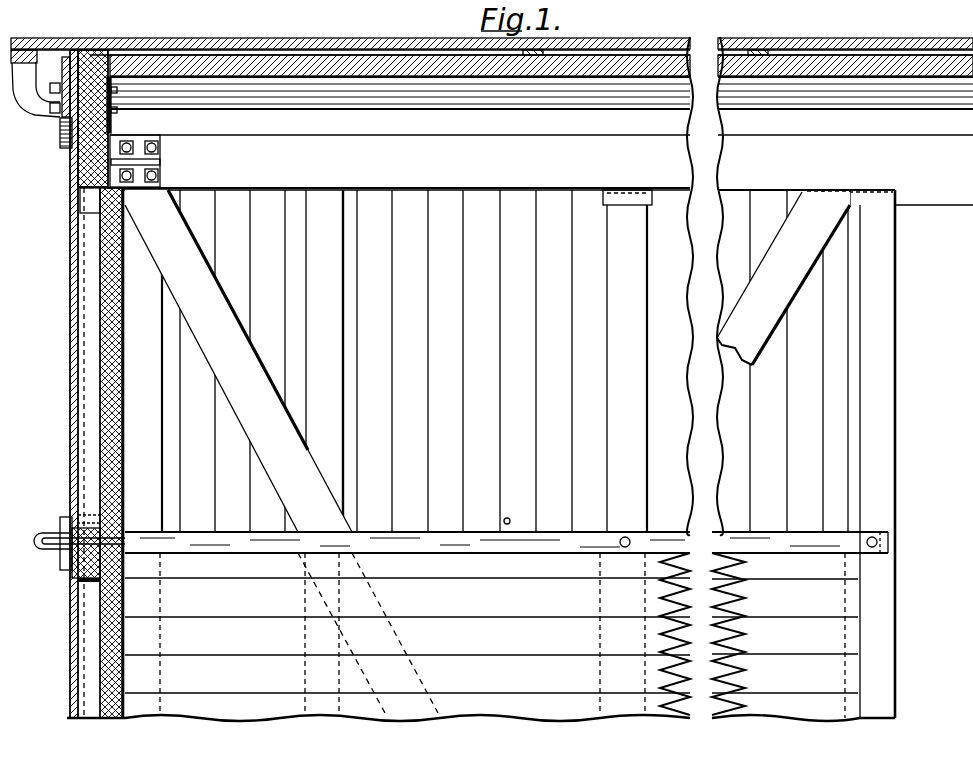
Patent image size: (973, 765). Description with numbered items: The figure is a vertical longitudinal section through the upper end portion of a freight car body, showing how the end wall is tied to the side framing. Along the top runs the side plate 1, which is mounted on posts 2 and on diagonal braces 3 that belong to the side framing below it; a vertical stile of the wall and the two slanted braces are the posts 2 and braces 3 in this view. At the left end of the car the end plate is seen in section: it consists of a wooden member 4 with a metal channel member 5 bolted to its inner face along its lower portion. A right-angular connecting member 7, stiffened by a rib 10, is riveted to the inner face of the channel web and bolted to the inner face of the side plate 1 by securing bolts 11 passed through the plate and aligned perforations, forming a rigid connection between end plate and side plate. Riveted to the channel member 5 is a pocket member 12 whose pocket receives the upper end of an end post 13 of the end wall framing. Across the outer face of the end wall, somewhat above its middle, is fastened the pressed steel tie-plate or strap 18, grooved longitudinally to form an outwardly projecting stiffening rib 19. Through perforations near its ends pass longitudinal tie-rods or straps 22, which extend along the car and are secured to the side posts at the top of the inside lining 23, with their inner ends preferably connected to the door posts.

The side plate 1 is at (540, 162).
The post 2 is at (906, 302).
The diagonal brace 3 is at (487, 451).
The wooden member 4 is at (92, 148).
The metal channel member 5 is at (121, 133).
The connecting member 7 is at (153, 165).
The stiffening rib 10 is at (130, 161).
The securing bolt 11 is at (128, 182).
The pocket member 12 is at (92, 198).
The end post 13 is at (91, 407).
The tie-plate or strap 18 is at (65, 515).
The stiffening rib 19 is at (40, 548).
The tie-rod or strap 22 is at (532, 540).
The inside lining 23 is at (510, 637).